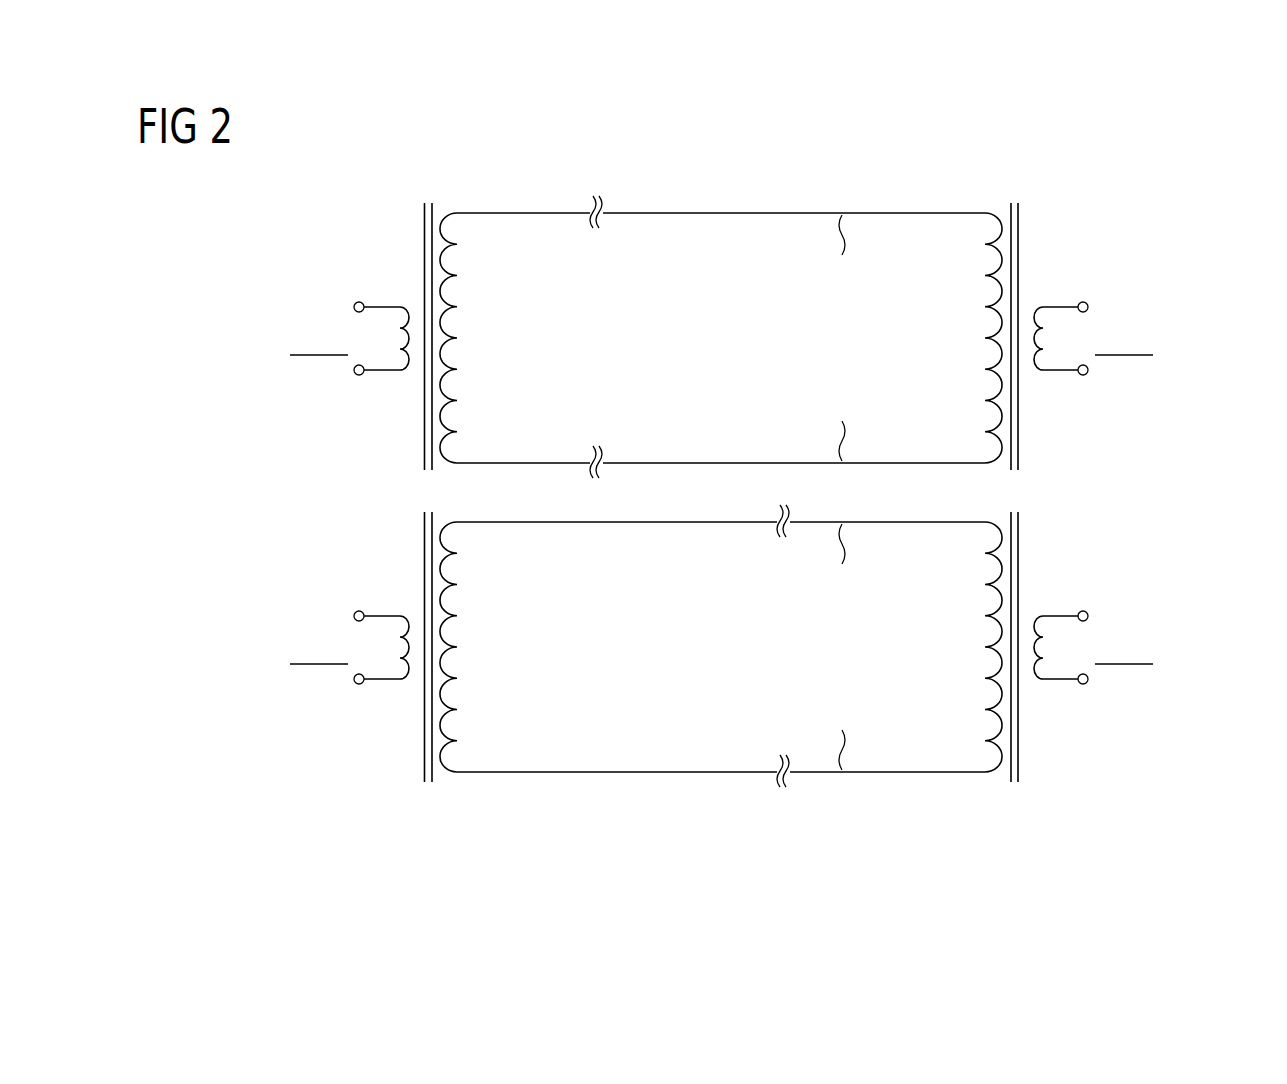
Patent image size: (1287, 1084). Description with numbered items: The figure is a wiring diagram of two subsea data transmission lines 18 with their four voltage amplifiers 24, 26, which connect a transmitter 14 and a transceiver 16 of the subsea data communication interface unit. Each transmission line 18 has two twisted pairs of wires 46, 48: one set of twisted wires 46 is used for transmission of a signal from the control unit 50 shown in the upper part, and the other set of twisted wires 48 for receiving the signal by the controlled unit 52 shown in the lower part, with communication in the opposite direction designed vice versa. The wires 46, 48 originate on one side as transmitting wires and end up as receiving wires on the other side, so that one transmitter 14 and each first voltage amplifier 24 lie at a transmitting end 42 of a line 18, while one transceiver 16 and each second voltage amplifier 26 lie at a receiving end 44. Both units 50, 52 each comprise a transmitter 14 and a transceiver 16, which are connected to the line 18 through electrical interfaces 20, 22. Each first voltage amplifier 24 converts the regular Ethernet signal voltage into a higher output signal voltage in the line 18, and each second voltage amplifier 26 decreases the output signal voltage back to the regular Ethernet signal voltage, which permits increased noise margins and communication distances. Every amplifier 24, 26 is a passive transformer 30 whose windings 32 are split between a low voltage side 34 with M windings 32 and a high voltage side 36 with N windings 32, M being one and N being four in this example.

The transmitter 14 is at (370, 137).
The transceiver 16 is at (1097, 137).
The subsea data transmission line 18 is at (635, 215).
The electrical interface 20 is at (281, 405).
The electrical interface 22 is at (281, 580).
The first voltage amplifier 24 is at (397, 250).
The second voltage amplifier 26 is at (1046, 247).
The transformer 30 is at (398, 736).
The windings 32 is at (457, 339).
The low voltage side 34 is at (351, 450).
The high voltage side 36 is at (583, 355).
The transmitting end 42 is at (452, 194).
The receiving end 44 is at (988, 194).
The twisted pair of wires 46 is at (515, 215).
The twisted pair of wires 48 is at (514, 524).
The control unit 50 is at (282, 510).
The controlled unit 52 is at (1187, 510).